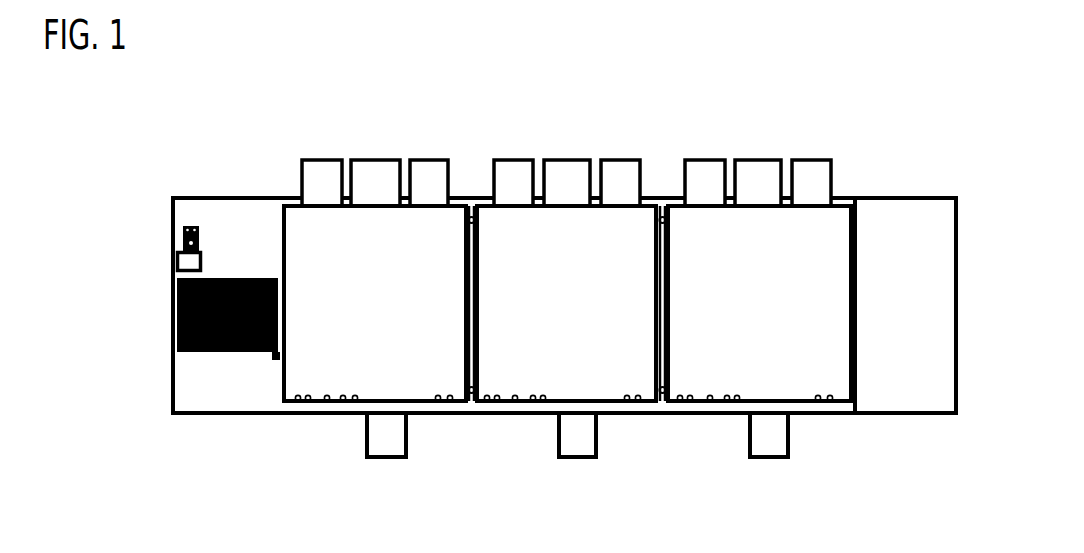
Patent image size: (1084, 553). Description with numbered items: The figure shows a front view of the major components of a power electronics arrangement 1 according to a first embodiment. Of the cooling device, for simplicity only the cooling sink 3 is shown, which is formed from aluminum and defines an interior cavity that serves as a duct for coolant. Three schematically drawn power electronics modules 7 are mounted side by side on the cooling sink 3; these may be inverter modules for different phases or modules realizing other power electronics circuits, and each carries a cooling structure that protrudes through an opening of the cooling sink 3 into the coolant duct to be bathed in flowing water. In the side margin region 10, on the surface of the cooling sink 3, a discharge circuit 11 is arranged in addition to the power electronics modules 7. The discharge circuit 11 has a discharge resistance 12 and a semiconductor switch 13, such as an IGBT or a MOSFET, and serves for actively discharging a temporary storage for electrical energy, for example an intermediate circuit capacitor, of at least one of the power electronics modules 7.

The power electronics arrangement 1 is at (908, 155).
The cooling sink 3 is at (224, 211).
The power electronics modules 7 is at (420, 228).
The side margin region 10 is at (225, 446).
The discharge circuit 11 is at (160, 308).
The discharge resistance 12 is at (160, 308).
The semiconductor switch 13 is at (177, 262).